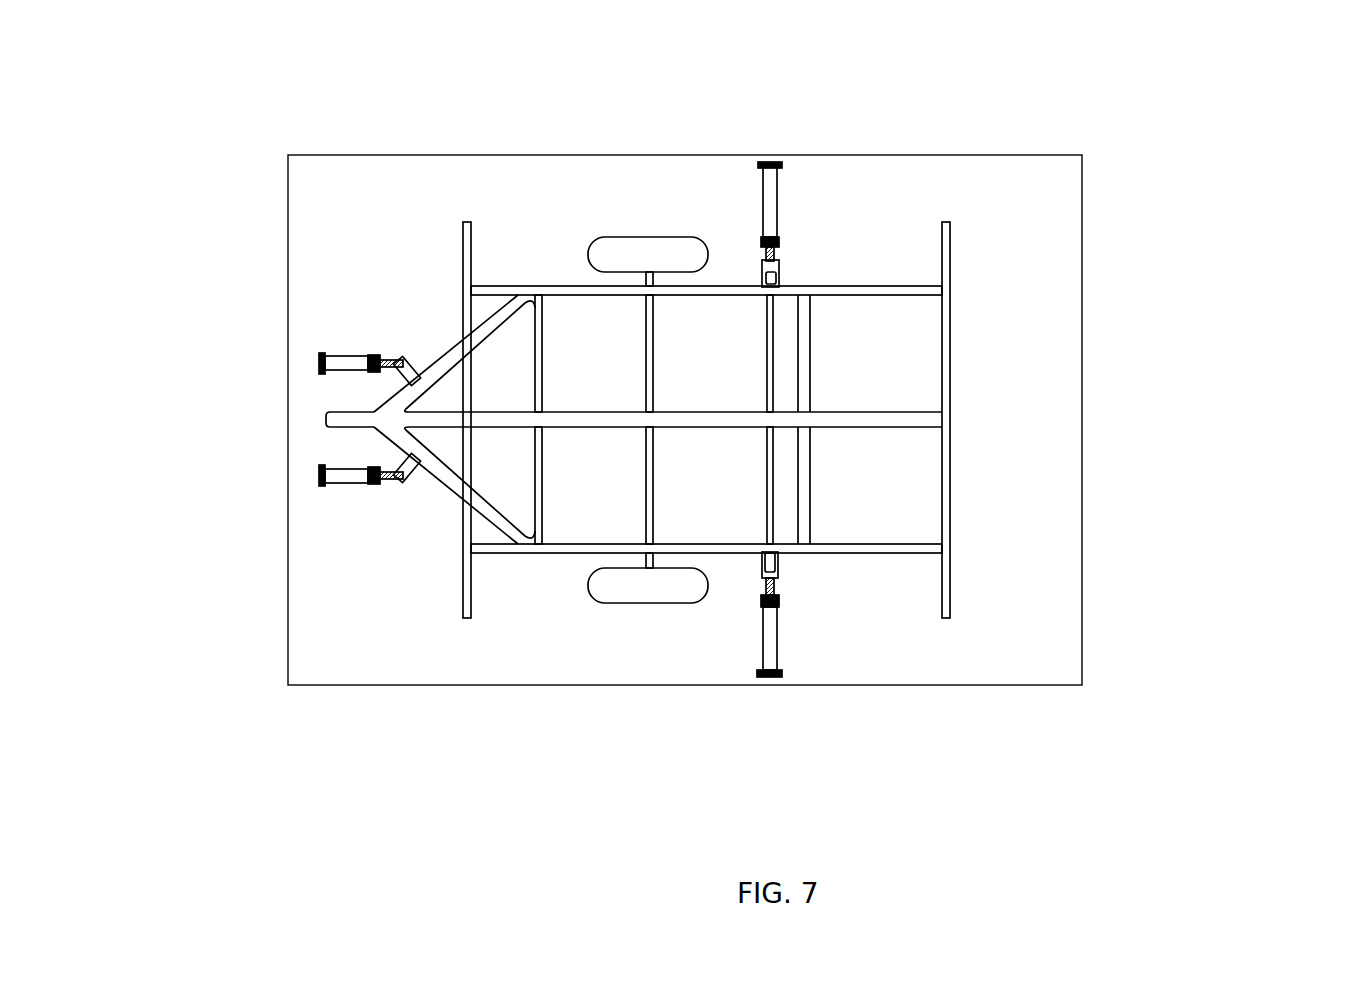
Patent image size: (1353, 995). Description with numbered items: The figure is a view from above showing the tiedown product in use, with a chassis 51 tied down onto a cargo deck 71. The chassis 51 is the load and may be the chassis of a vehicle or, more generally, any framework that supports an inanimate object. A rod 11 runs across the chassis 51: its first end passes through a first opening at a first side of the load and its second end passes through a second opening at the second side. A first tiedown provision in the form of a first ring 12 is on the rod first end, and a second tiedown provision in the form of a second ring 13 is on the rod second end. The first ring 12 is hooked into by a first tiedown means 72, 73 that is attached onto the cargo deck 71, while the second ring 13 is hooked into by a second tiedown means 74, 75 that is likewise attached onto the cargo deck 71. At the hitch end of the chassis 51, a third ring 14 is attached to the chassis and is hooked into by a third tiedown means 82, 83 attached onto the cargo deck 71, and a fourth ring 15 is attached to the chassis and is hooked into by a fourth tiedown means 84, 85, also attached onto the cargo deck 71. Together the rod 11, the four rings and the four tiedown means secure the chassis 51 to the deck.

The rod 11 is at (772, 503).
The first ring 12 is at (762, 558).
The second ring 13 is at (782, 273).
The third ring 14 is at (410, 483).
The fourth ring 15 is at (407, 357).
The chassis 51 is at (950, 418).
The cargo deck 71 is at (1083, 311).
The first tiedown means 72 is at (777, 645).
The first tiedown means 73 is at (773, 587).
The second tiedown means 74 is at (763, 205).
The second tiedown means 75 is at (780, 247).
The third tiedown means 82 is at (348, 469).
The third tiedown means 83 is at (393, 485).
The fourth tiedown means 84 is at (345, 371).
The fourth tiedown means 85 is at (392, 357).